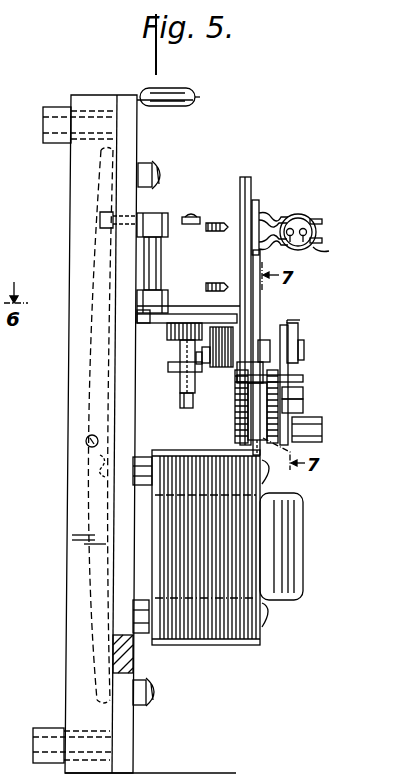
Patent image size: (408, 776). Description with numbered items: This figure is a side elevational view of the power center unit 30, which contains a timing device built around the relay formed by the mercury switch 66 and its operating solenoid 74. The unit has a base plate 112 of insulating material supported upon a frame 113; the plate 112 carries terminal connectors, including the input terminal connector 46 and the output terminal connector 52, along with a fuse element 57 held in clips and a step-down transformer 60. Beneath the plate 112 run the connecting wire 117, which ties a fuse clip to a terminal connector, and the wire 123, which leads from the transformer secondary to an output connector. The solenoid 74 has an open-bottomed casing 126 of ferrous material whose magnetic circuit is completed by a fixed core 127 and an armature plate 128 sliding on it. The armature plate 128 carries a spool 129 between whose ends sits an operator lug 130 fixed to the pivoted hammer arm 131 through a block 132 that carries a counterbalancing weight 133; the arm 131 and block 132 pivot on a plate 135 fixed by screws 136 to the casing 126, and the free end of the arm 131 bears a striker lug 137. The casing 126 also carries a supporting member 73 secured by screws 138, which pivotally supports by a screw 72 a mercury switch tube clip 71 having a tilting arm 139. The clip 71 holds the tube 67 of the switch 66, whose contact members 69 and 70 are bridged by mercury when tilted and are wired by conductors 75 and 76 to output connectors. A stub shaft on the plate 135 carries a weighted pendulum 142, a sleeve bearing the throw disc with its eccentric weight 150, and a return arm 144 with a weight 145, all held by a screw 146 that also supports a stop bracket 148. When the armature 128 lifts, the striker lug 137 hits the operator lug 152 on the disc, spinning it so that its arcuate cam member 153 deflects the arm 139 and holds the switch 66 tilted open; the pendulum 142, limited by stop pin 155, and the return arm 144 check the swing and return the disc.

The frame 113 is at (78, 178).
The base plate 112 is at (150, 749).
The connecting wire 117 is at (95, 614).
The wire 123 is at (100, 208).
The output terminal connector 52 is at (162, 167).
The input terminal connector 46 is at (153, 690).
The fuse element 57 is at (162, 268).
The armature plate 128 is at (142, 318).
The casing 126 is at (180, 216).
The fixed core 127 is at (197, 220).
The solenoid 74 is at (216, 222).
The supporting member 73 is at (247, 180).
The screws 138 is at (256, 232).
The screws 136 is at (262, 292).
The mercury switch tube clip 71 is at (270, 218).
The screw 72 is at (285, 222).
The mercury switch 66 is at (322, 230).
The conductor 76 is at (292, 230).
The conductor 75 is at (305, 230).
The tube 67 is at (322, 242).
The contact member 69 is at (314, 246).
The contact member 70 is at (296, 250).
The counterbalancing weight 133 is at (162, 347).
The spool 129 is at (168, 374).
The block 132 is at (227, 368).
The operator lug 130 is at (204, 368).
The hammer arm 131 is at (232, 370).
The stop pin 155 is at (246, 410).
The pendulum 142 is at (252, 426).
The striker lug 137 is at (272, 380).
The tilting arm 139 is at (264, 330).
The plate 135 is at (248, 316).
The arcuate cam member 153 is at (255, 322).
The stop bracket 148 is at (300, 340).
The screw 146 is at (305, 352).
The operator lug 152 is at (266, 352).
The return arm 144 is at (304, 389).
The eccentrically-located weight 150 is at (303, 406).
The weight 145 is at (320, 436).
The step-down transformer 60 is at (304, 550).
The power unit 30 is at (71, 535).